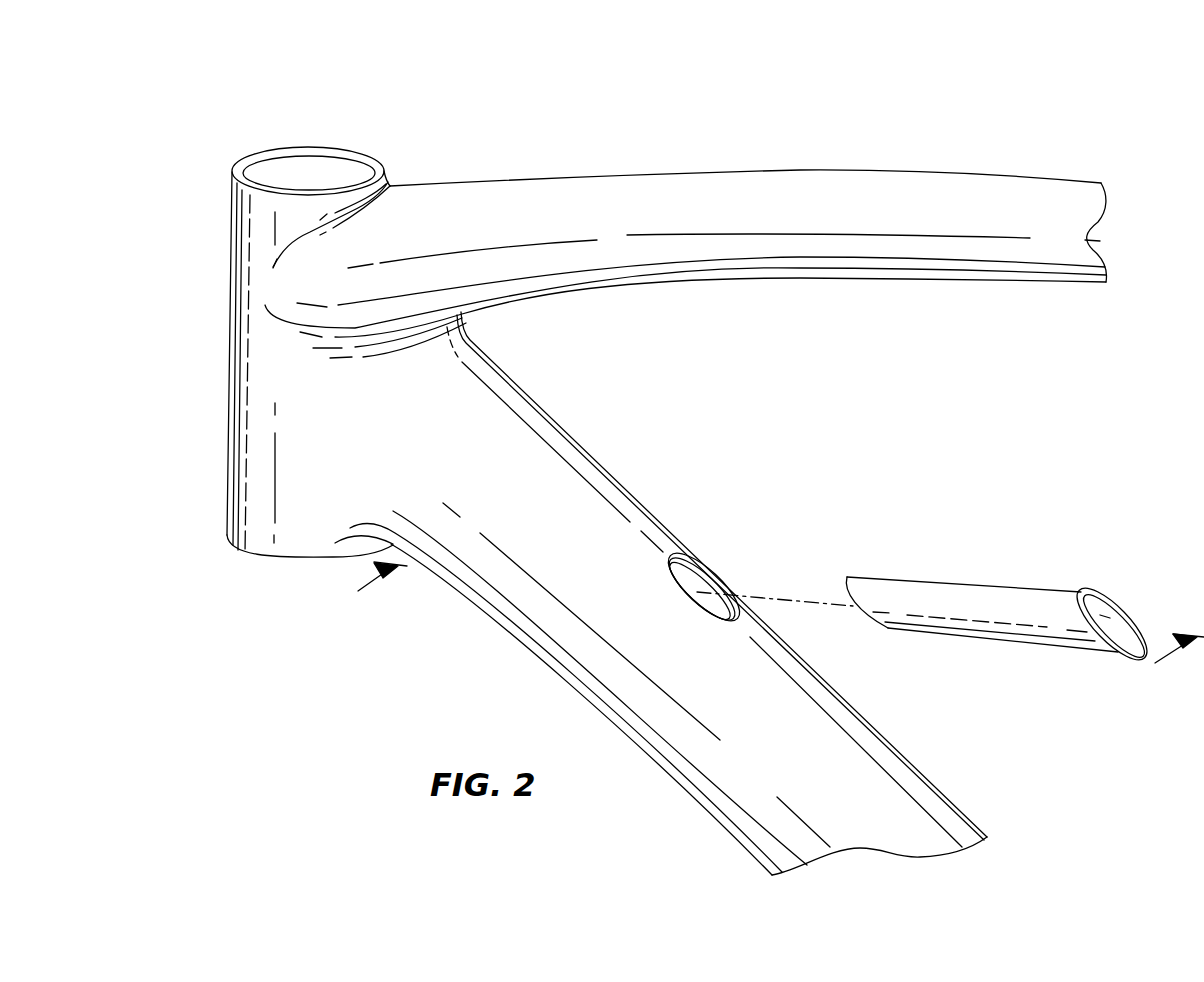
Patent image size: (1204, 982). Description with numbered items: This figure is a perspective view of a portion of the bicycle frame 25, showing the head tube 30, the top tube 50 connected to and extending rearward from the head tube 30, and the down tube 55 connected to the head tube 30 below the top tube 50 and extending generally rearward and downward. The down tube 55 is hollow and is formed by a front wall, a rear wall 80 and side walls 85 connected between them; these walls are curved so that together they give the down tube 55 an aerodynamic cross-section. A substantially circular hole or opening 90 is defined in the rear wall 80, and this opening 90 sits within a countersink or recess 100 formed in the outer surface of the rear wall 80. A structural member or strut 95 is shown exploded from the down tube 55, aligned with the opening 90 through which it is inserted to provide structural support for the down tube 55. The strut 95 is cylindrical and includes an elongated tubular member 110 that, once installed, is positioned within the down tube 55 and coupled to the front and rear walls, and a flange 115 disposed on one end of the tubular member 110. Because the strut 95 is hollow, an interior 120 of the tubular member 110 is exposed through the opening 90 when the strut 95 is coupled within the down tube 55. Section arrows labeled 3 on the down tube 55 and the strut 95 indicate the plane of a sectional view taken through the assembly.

The frame 25 is at (213, 80).
The head tube 30 is at (260, 409).
The top tube 50 is at (800, 172).
The down tube 55 is at (628, 481).
The rear wall 80 is at (552, 433).
The side walls 85 is at (607, 693).
The opening 90 is at (706, 565).
The recess 100 is at (748, 608).
The strut 95 is at (1000, 587).
The tubular member 110 is at (989, 640).
The flange 115 is at (1093, 598).
The interior 120 is at (1122, 629).
The section line 3- 3 is at (773, 628).